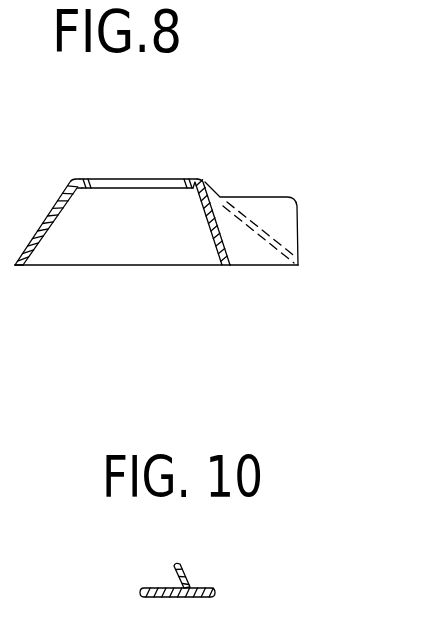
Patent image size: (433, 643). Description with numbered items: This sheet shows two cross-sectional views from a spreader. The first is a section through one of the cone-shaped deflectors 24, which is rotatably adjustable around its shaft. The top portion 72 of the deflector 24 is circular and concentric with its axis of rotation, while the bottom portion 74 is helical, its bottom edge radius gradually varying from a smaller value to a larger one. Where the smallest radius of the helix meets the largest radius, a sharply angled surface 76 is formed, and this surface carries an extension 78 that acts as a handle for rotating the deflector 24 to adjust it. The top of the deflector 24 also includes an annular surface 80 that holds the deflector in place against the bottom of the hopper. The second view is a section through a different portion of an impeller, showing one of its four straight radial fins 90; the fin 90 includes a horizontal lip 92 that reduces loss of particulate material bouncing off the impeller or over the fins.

In FIG. 8, the deflector 24 is at (121, 138).
In FIG. 8, the top portion 72 is at (164, 180).
In FIG. 8, the bottom portion 74 is at (140, 267).
In FIG. 8, the sharply angled surface 76 is at (272, 267).
In FIG. 8, the extension 78 is at (297, 218).
In FIG. 8, the annular surface 80 is at (205, 181).
In FIG. 10, the radial fin 90 is at (189, 578).
In FIG. 10, the horizontal lip 92 is at (180, 565).